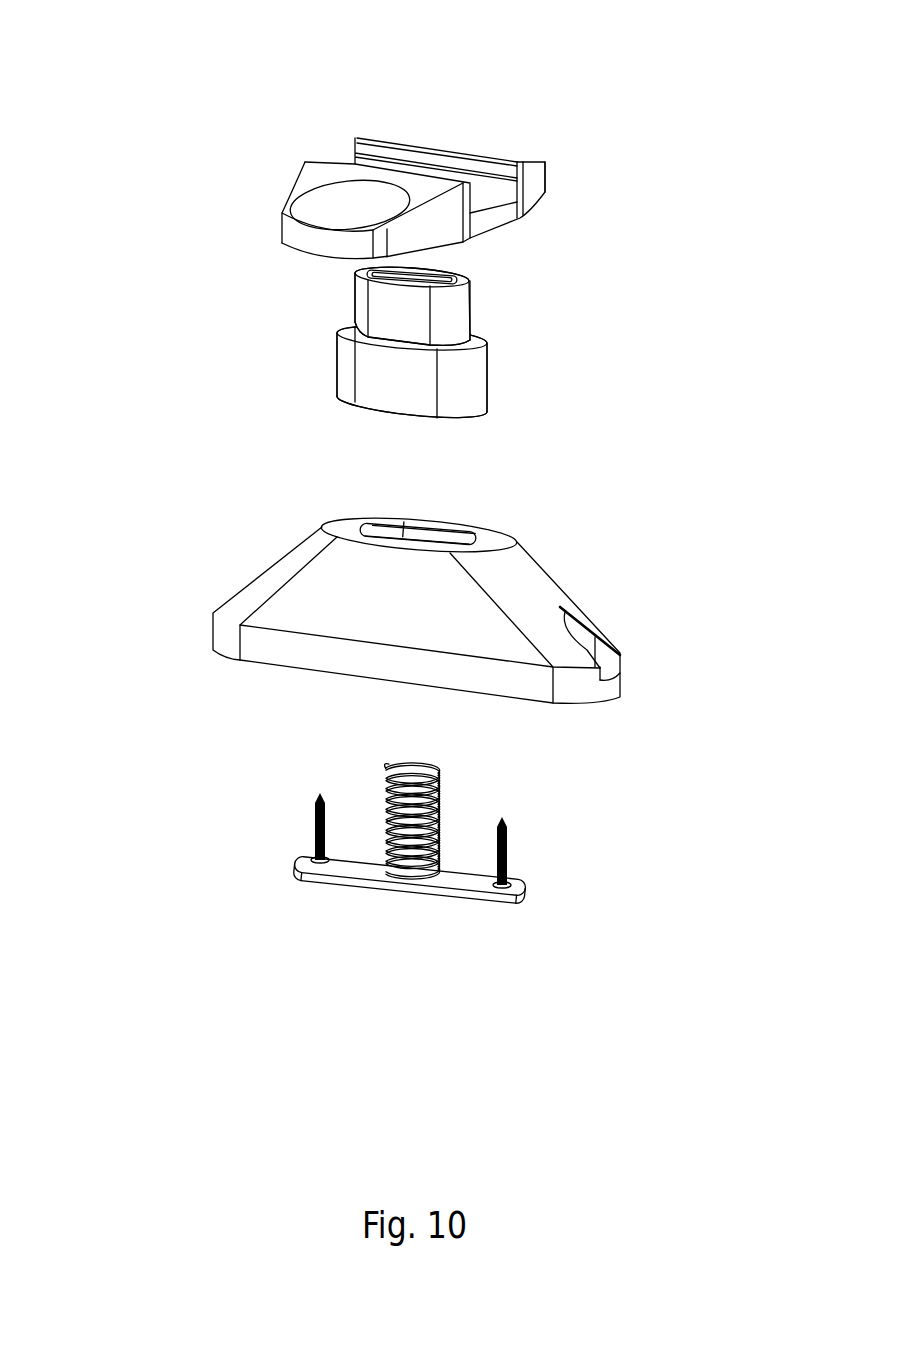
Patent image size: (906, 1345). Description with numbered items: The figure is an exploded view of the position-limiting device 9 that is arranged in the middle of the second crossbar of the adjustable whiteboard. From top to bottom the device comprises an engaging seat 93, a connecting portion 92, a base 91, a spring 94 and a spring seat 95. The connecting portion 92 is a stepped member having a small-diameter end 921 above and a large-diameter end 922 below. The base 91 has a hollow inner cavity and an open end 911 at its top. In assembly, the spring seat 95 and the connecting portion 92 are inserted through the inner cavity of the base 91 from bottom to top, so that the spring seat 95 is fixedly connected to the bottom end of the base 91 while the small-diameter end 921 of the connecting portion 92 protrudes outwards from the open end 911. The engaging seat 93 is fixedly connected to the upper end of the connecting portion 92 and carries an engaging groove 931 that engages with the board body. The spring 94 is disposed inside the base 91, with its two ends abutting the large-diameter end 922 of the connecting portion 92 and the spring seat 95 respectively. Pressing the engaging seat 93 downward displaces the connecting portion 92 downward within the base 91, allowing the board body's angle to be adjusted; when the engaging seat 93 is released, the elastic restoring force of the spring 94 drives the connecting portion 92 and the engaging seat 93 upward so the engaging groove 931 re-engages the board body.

The position-limiting device 9 is at (158, 122).
The base 91 is at (427, 581).
The open end 911 is at (382, 530).
The connecting portion 92 is at (548, 341).
The small-diameter end 921 is at (453, 320).
The large-diameter end 922 is at (463, 395).
The engaging seat 93 is at (467, 133).
The engaging groove 931 is at (492, 195).
The spring 94 is at (390, 793).
The spring seat 95 is at (461, 884).